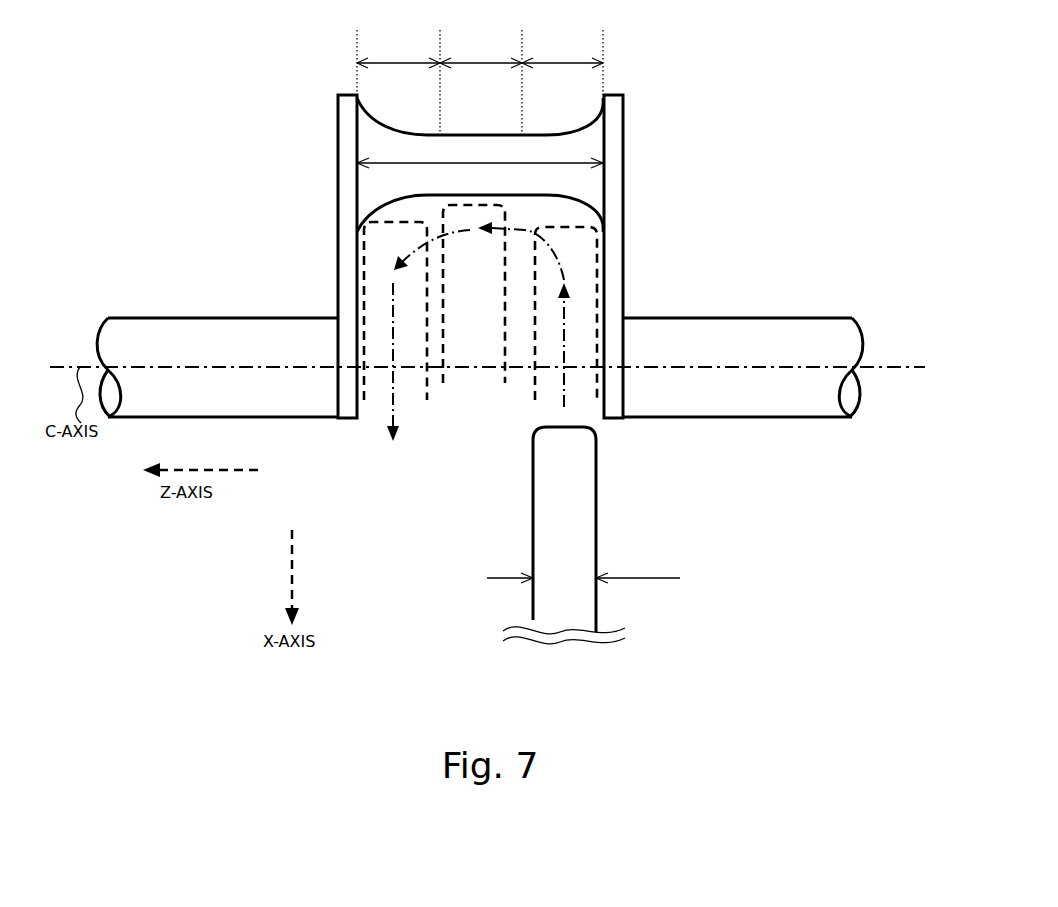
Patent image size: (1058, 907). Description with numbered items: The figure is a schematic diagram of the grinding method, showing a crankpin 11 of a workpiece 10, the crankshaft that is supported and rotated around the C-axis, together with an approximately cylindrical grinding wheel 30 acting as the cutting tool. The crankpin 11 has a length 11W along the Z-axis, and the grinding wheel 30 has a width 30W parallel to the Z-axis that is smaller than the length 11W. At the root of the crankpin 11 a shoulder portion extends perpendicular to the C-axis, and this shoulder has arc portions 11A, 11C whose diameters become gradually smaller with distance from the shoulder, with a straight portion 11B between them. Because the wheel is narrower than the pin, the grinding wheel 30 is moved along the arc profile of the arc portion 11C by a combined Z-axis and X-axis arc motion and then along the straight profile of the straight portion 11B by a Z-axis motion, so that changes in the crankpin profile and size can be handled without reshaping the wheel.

The workpiece 10 is at (192, 283).
The crankpin 11 is at (380, 145).
The arc portion 11A is at (398, 82).
The straight portion 11B is at (481, 82).
The arc portion 11C is at (562, 62).
The length of the crankpin 11W is at (480, 153).
The grinding wheel 30 is at (405, 222).
The width of the grinding wheel 30W is at (583, 567).